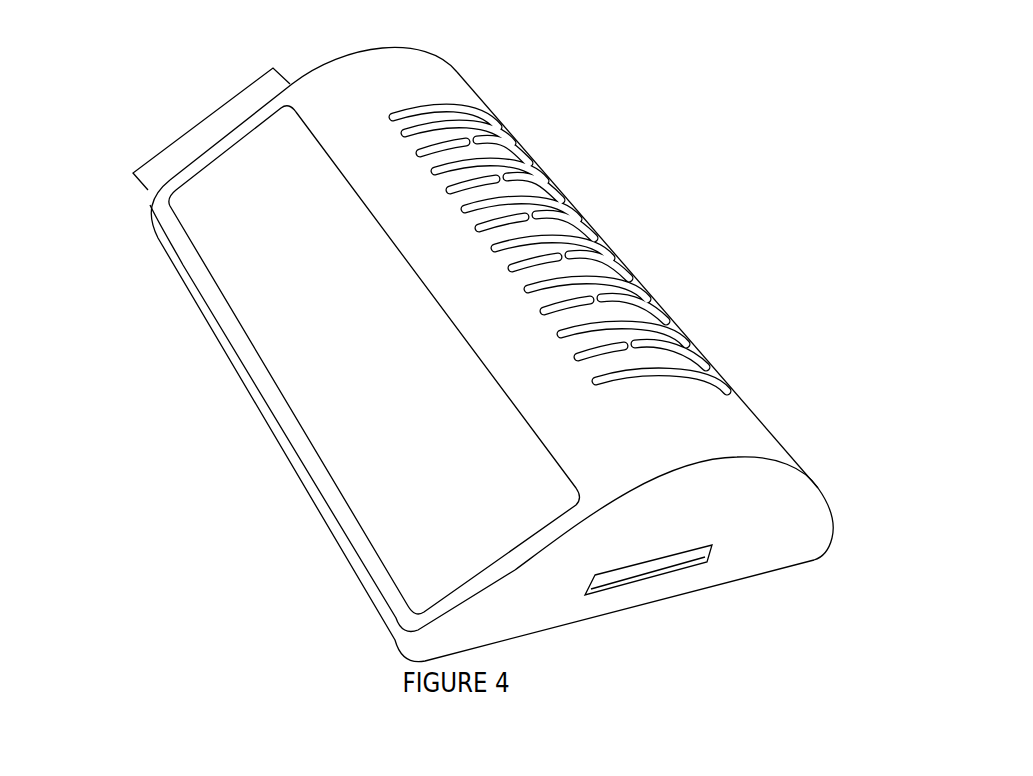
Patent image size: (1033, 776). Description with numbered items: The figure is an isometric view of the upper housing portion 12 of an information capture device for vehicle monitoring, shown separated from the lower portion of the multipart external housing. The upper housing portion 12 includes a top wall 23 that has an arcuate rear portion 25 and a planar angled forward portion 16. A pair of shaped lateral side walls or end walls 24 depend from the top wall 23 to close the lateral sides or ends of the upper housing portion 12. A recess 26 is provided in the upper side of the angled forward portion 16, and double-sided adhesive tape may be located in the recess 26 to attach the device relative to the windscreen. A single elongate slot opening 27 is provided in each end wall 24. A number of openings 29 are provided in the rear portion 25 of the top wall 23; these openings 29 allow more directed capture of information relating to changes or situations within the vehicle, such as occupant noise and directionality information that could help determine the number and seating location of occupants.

The upper housing portion 12 is at (215, 580).
The planar angled forward portion 16 is at (205, 120).
The top wall 23 is at (343, 118).
The end wall 24 is at (753, 528).
The arcuate rear portion 25 is at (757, 413).
The recess 26 is at (348, 383).
The elongate slot opening 27 is at (667, 573).
The openings 29 is at (625, 250).